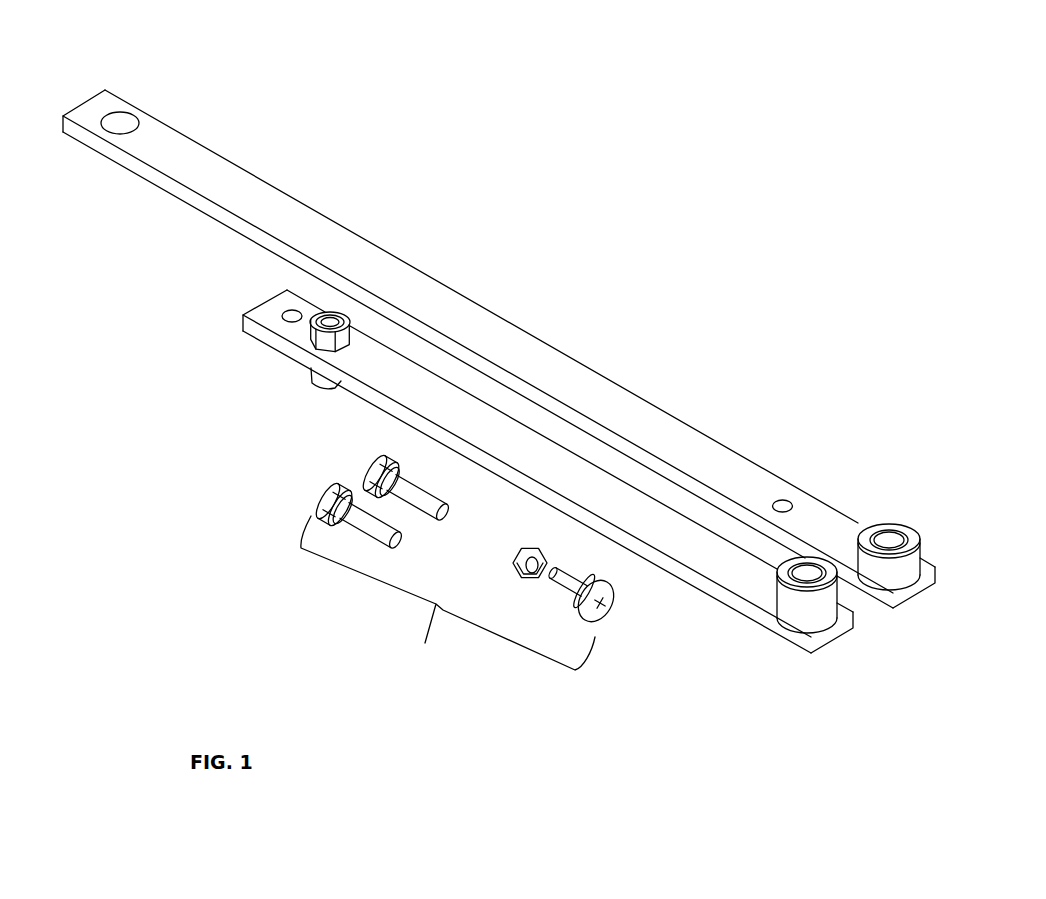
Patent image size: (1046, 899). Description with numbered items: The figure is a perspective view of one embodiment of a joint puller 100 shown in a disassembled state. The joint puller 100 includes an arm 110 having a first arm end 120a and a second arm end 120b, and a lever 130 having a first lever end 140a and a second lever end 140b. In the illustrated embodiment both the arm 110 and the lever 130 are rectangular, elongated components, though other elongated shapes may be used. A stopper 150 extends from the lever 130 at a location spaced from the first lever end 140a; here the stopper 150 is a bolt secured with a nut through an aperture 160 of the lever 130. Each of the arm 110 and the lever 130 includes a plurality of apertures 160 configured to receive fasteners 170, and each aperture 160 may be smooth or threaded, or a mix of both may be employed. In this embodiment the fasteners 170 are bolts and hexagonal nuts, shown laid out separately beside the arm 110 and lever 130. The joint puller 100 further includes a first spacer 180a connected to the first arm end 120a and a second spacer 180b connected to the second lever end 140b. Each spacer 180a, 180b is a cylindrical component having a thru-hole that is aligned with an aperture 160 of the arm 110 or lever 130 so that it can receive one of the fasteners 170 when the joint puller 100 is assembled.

The joint puller 100 is at (691, 120).
The arm 110 is at (512, 337).
The first arm end 120a is at (910, 585).
The second arm end 120b is at (95, 110).
The lever 130 is at (390, 362).
The first lever end 140a is at (248, 307).
The second lever end 140b is at (822, 628).
The stopper 150 is at (312, 335).
The aperture 160 is at (112, 127).
The fasteners 170 is at (461, 569).
The first spacer 180a is at (885, 523).
The second spacer 180b is at (777, 600).